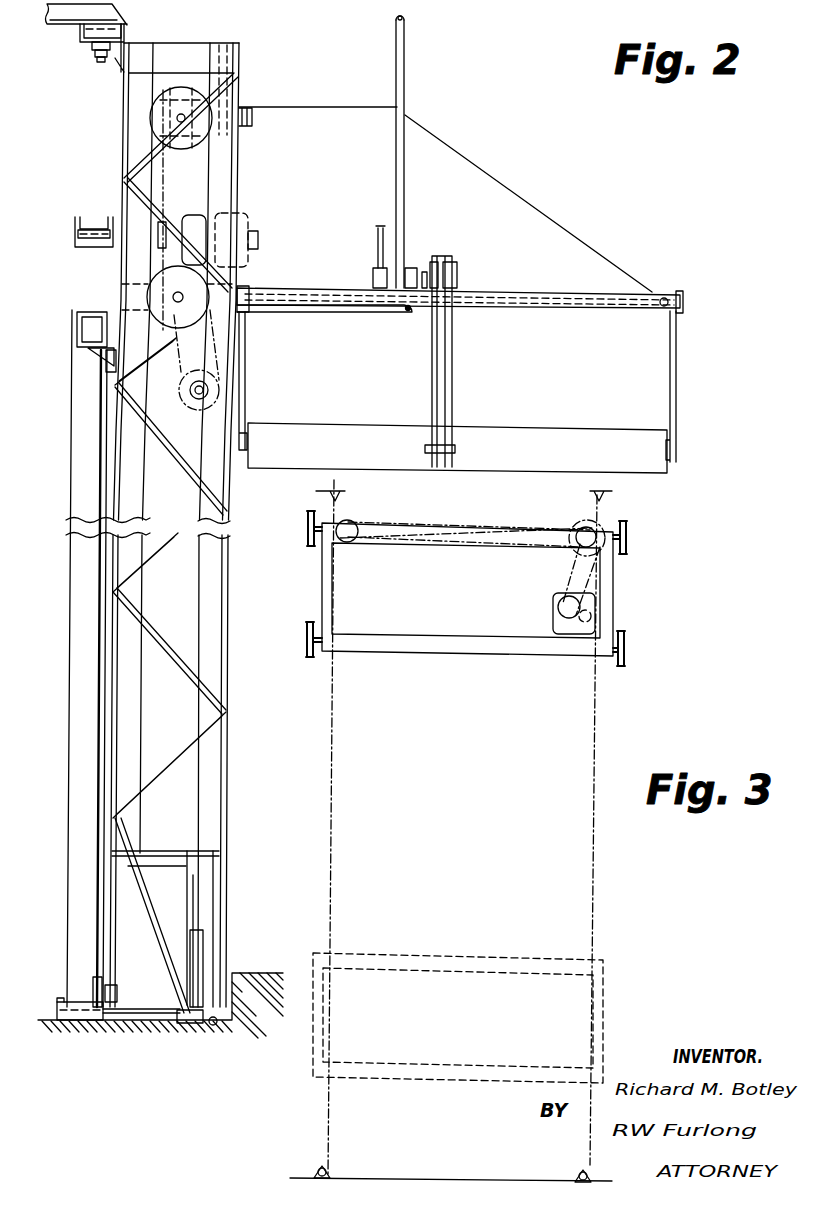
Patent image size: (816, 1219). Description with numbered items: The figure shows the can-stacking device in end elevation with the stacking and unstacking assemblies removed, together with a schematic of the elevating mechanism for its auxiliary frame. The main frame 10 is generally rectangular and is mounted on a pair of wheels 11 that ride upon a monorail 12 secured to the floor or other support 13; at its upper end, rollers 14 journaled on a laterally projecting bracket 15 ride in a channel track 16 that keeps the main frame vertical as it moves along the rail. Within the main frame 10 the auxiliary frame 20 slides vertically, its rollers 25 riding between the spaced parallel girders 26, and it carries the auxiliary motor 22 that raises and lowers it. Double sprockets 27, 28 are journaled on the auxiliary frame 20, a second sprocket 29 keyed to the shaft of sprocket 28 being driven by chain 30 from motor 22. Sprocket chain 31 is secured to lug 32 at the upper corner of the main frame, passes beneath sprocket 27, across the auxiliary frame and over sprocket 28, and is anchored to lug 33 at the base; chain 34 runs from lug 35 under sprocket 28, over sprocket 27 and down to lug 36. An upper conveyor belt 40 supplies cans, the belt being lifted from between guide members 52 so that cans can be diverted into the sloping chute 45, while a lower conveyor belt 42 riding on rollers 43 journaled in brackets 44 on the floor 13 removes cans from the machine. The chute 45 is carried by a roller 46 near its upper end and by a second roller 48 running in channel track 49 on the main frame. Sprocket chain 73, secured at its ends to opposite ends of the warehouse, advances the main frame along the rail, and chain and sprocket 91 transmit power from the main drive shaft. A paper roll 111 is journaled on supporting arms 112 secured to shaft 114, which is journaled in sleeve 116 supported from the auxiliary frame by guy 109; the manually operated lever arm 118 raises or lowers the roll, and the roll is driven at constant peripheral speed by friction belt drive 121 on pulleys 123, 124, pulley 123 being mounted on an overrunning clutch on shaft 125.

In FIG. 2, the main frame 10 is at (239, 611).
In FIG. 2, the wheels 11 is at (208, 948).
In FIG. 2, the monorail 12 is at (214, 1028).
In FIG. 2, the floor or other support 13 is at (54, 1014).
In FIG. 2, the rollers 14 is at (84, 42).
In FIG. 2, the bracket 15 is at (116, 61).
In FIG. 2, the channel track 16 is at (123, 21).
In FIG. 2, the auxiliary frame 20 is at (300, 286).
In FIG. 3, the auxiliary frame 20 is at (460, 652).
In FIG. 3, the auxiliary motor 22 is at (553, 602).
In FIG. 2, the rollers 25 is at (150, 118).
In FIG. 3, the rollers 25 is at (288, 604).
In FIG. 2, the girders 26 is at (202, 711).
In FIG. 3, the double sprocket 27 is at (368, 540).
In FIG. 3, the double sprocket 28 is at (566, 536).
In FIG. 3, the second sprocket 29 is at (604, 519).
In FIG. 3, the chain 30 is at (560, 570).
In FIG. 3, the sprocket chain 31 is at (350, 504).
In FIG. 3, the lug 32 is at (342, 492).
In FIG. 3, the lug 33 is at (580, 1178).
In FIG. 3, the chain 34 is at (436, 528).
In FIG. 3, the lug 35 is at (604, 494).
In FIG. 3, the lug 36 is at (326, 1175).
In FIG. 2, the upper conveyor belt 40 is at (92, 228).
In FIG. 2, the lower conveyor belt 42 is at (116, 350).
In FIG. 2, the rollers 43 is at (78, 1022).
In FIG. 2, the brackets 44 is at (112, 1012).
In FIG. 2, the sloping chute 45 is at (72, 454).
In FIG. 2, the roller 46 is at (96, 356).
In FIG. 2, the second roller 48 is at (112, 985).
In FIG. 2, the channel track 49 is at (118, 992).
In FIG. 2, the guide members 52 is at (114, 214).
In FIG. 2, the sprocket chain 73 is at (200, 1023).
In FIG. 2, the chain and sprocket 91 is at (215, 333).
In FIG. 2, the guy 109 is at (516, 200).
In FIG. 2, the let-off paper roll 111 is at (582, 434).
In FIG. 2, the supporting arms 112 is at (248, 370).
In FIG. 2, the shaft 114 is at (510, 292).
In FIG. 2, the sleeve 116 is at (574, 293).
In FIG. 2, the lever arm 118 is at (378, 231).
In FIG. 2, the friction belt drive 121 is at (456, 364).
In FIG. 2, the pulley 123 is at (456, 270).
In FIG. 2, the pulley 124 is at (458, 442).
In FIG. 2, the shaft 125 is at (418, 264).